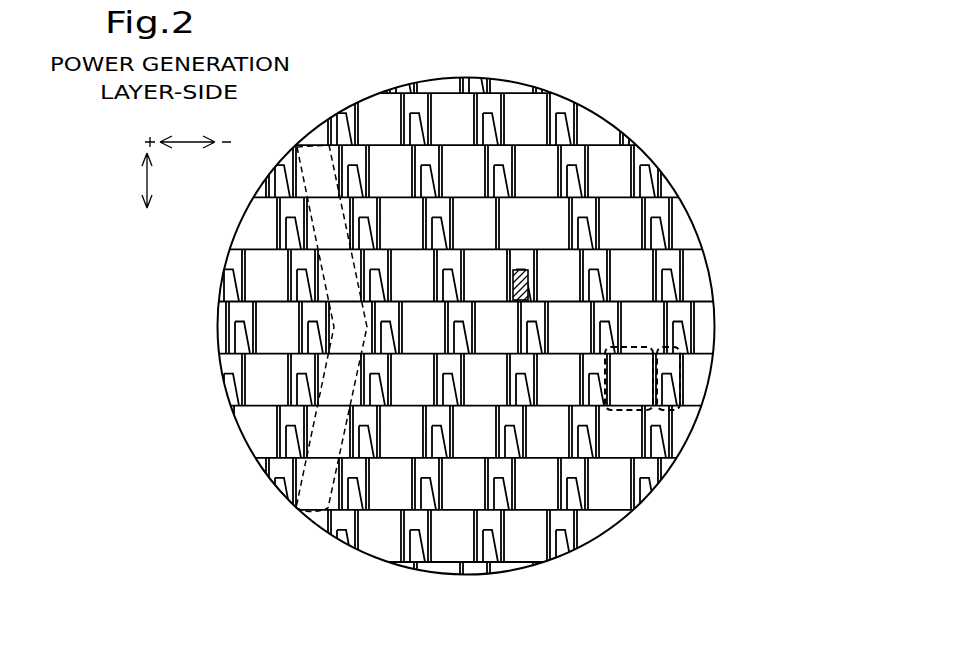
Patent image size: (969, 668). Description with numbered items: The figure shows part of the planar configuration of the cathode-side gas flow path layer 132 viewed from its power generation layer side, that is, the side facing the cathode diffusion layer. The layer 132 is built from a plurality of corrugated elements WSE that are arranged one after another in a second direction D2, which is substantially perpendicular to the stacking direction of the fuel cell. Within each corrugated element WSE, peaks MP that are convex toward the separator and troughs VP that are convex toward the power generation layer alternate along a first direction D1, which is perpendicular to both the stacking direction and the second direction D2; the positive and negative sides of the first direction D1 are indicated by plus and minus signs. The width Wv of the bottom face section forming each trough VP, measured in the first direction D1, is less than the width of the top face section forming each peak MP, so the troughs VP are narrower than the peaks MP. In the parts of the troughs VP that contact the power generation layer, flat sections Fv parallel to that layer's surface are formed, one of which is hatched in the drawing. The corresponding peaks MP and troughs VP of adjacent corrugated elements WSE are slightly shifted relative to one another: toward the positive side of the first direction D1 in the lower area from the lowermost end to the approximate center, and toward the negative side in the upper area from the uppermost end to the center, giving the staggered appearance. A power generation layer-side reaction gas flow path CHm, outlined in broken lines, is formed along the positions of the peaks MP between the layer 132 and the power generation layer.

The cathode-side gas flow path layer 132 is at (517, 102).
The flat section Fv is at (532, 279).
The peak MP is at (642, 346).
The trough VP is at (672, 347).
The corrugated element WSE is at (207, 300).
The power generation layer-side reaction gas flow path CHm is at (293, 507).
The width of the bottom face section Wv is at (530, 213).
The first direction D1 is at (188, 128).
The second direction D2 is at (129, 180).